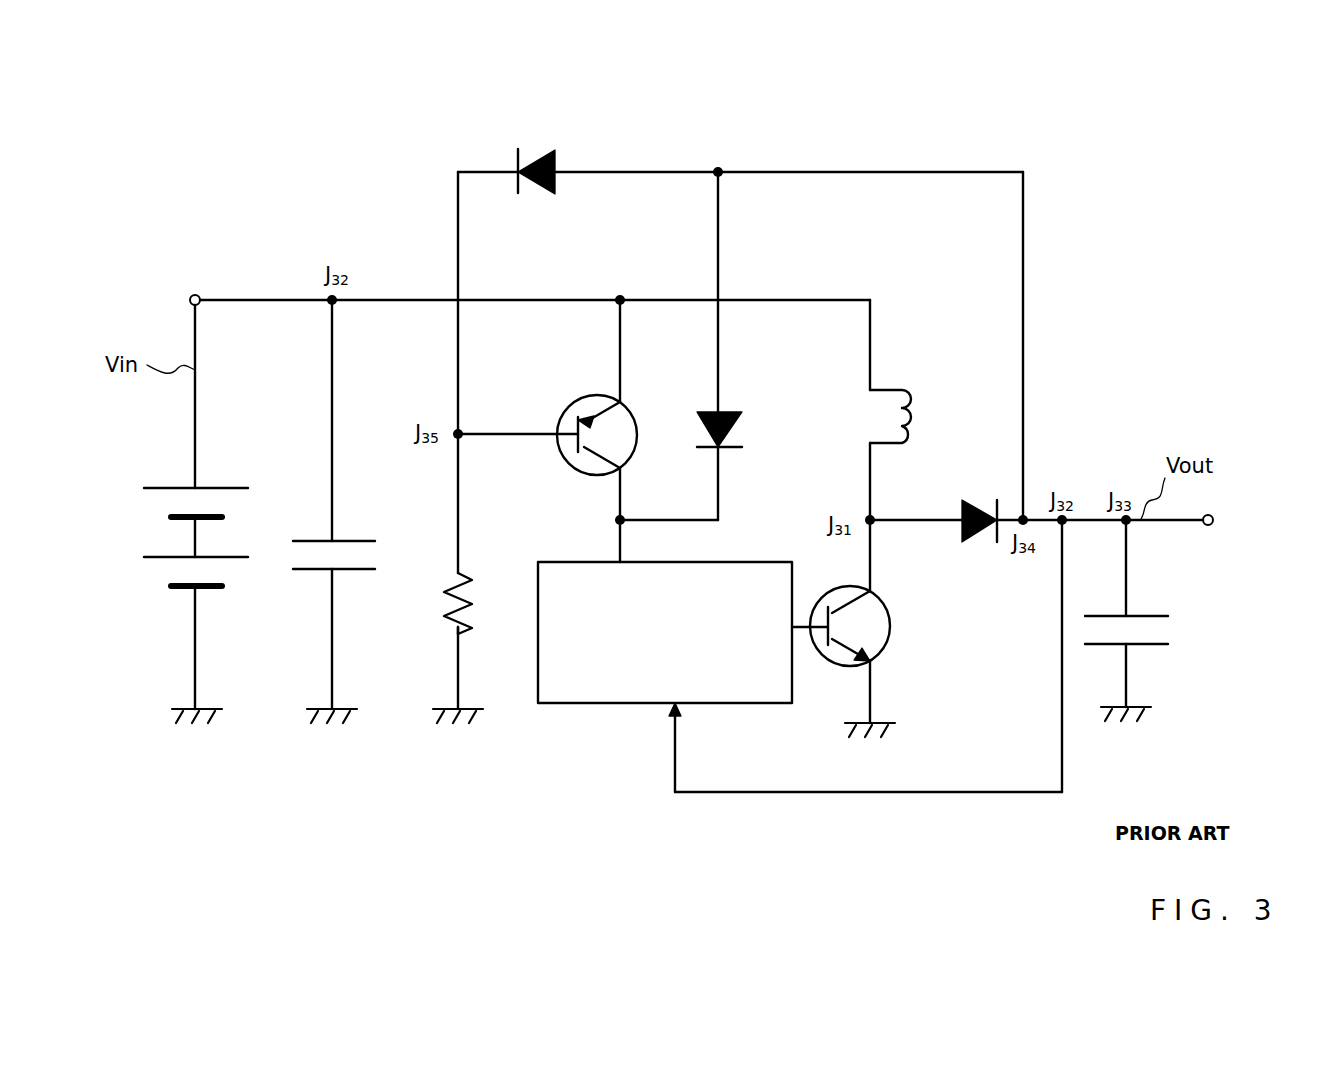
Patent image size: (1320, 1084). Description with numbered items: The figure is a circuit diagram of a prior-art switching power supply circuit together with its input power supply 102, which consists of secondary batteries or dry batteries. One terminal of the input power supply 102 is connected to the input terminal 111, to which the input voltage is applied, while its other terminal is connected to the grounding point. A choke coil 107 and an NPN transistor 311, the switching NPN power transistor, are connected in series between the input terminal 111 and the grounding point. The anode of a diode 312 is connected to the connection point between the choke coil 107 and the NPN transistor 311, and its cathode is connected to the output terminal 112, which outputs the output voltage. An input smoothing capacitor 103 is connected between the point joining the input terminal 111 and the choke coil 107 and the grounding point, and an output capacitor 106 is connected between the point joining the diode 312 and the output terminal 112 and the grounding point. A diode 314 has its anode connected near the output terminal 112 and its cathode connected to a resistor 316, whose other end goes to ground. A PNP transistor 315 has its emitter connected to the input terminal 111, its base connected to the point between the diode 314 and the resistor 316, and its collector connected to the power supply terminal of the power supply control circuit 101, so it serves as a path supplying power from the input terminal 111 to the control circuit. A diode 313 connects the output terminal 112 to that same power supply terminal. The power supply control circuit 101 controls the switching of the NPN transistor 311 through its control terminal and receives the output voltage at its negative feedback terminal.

The input terminal 111 is at (202, 289).
The input power supply 102 is at (167, 596).
The input smoothing capacitor 103 is at (314, 584).
The resistor 316 is at (436, 646).
The diode 314 is at (563, 157).
The PNP transistor 315 is at (630, 403).
The diode 313 is at (727, 407).
The choke coil 107 is at (902, 393).
The diode 312 is at (970, 500).
The NPN transistor 311 is at (890, 643).
The power supply control circuit 101 is at (578, 705).
The output capacitor 106 is at (1150, 655).
The output terminal 112 is at (1214, 517).